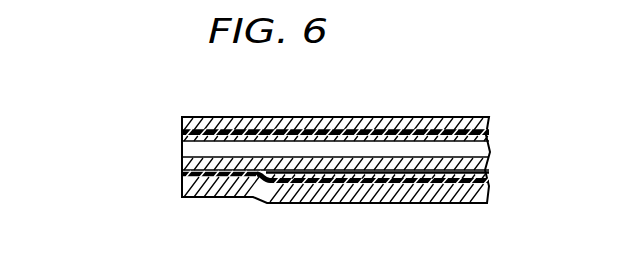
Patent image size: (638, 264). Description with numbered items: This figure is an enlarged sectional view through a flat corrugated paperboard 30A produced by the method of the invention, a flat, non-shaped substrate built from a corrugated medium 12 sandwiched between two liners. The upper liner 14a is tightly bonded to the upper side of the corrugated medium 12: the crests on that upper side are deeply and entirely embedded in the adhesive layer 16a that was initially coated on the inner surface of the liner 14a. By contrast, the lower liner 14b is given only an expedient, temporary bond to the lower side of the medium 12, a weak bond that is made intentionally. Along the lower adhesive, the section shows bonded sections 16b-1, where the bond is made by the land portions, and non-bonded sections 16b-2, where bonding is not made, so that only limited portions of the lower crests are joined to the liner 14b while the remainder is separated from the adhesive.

The flat corrugated paperboard 30A is at (303, 156).
The liner 14a is at (318, 124).
The adhesive layer 16a is at (228, 133).
The corrugated medium 12 is at (183, 168).
The bonded sections 16b-1 is at (205, 188).
The non-bonded sections 16b-2 is at (407, 180).
The liner 14b is at (252, 200).